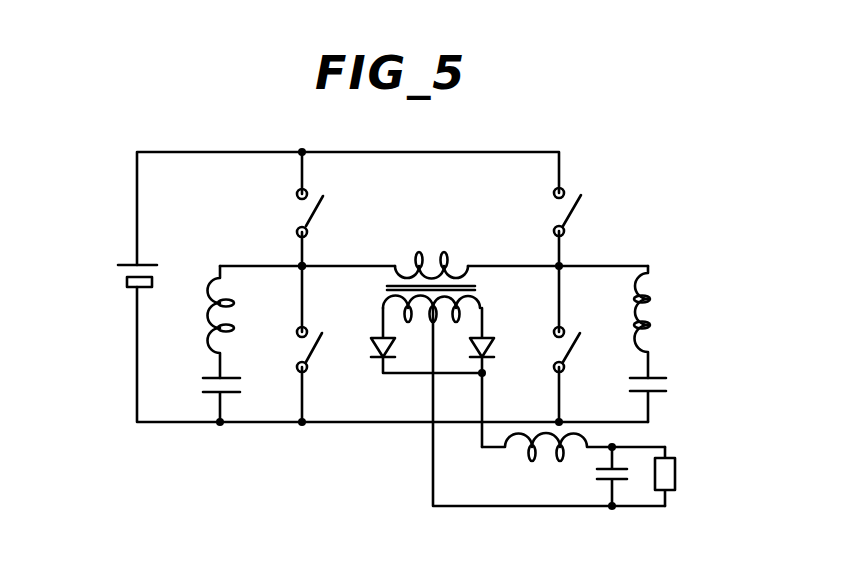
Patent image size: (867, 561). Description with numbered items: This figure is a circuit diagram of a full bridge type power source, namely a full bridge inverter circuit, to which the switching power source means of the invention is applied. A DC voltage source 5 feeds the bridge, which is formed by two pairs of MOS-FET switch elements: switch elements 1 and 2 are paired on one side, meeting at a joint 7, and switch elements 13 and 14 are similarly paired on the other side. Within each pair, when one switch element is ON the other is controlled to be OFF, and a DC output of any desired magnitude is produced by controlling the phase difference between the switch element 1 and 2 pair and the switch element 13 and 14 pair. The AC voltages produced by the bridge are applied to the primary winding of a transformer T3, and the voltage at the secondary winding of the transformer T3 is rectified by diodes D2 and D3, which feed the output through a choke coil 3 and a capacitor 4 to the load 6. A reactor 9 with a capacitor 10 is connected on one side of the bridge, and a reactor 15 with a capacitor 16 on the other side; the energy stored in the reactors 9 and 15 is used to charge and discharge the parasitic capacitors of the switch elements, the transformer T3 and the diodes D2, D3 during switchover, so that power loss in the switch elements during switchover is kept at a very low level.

The switch element 1 is at (298, 207).
The switch element 2 is at (298, 351).
The choke coil 3 is at (525, 460).
The capacitor 4 is at (596, 480).
The DC voltage source 5 is at (125, 263).
The load 6 is at (676, 474).
The joint 7 is at (305, 263).
The reactor 9 is at (212, 285).
The capacitor 10 is at (210, 378).
The switch element 13 is at (575, 216).
The switch element 14 is at (573, 358).
The reactor 15 is at (660, 305).
The capacitor 16 is at (666, 384).
The transformer T3 is at (445, 258).
The diode D2 is at (380, 339).
The diode D3 is at (488, 348).